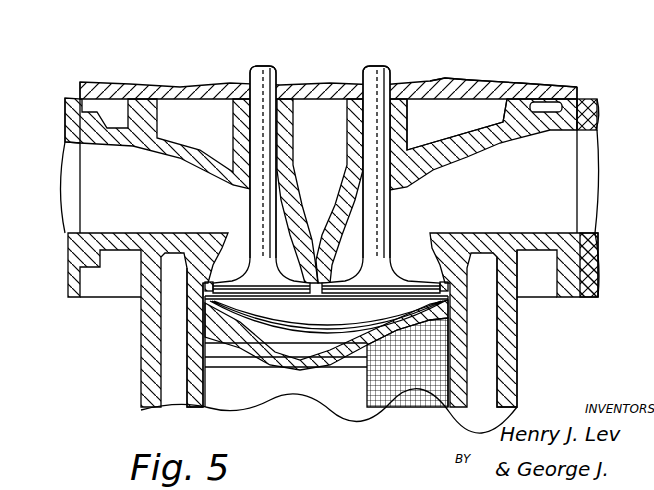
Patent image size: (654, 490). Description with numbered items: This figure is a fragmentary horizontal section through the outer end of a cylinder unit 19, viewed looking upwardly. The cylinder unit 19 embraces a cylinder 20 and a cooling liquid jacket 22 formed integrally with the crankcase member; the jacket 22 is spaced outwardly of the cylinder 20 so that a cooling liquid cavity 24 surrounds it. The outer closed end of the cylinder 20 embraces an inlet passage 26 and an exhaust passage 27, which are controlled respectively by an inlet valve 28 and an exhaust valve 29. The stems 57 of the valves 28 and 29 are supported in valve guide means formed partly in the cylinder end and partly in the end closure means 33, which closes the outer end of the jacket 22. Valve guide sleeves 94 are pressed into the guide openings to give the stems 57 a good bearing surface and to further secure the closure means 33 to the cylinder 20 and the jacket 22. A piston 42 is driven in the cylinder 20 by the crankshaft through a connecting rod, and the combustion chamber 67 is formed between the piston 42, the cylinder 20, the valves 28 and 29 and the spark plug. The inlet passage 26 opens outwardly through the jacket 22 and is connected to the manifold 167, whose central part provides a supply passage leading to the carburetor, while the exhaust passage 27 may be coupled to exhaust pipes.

The cylinder unit 19 is at (170, 84).
The end closure means 33 is at (452, 84).
The cooling liquid cavity means 24 is at (470, 120).
The manifold 167 is at (70, 124).
The exhaust passage 27 is at (185, 158).
The inlet passage 26 is at (460, 157).
The valve stem 57 is at (372, 127).
The valve guide sleeve 94 is at (257, 95).
The exhaust valve 29 is at (240, 282).
The inlet valve 28 is at (412, 282).
The combustion chamber 67 is at (356, 313).
The cylinder 20 is at (180, 397).
The cooling liquid jacket 22 is at (517, 378).
The piston 42 is at (280, 390).